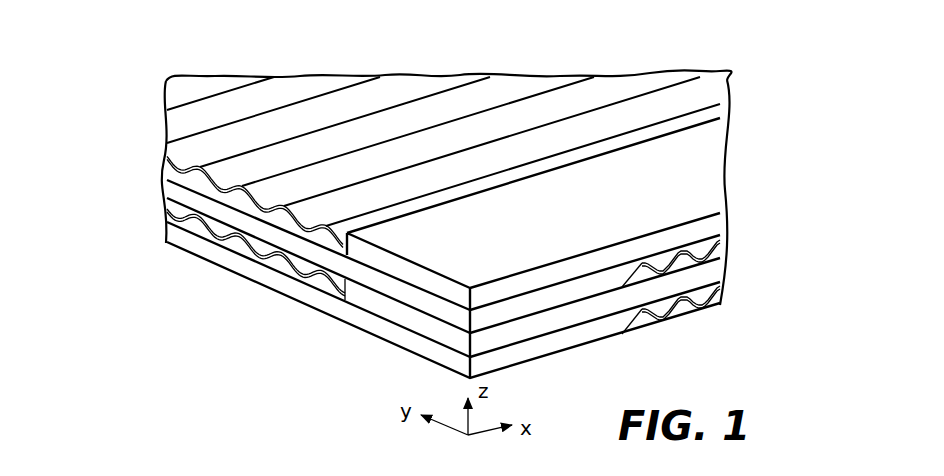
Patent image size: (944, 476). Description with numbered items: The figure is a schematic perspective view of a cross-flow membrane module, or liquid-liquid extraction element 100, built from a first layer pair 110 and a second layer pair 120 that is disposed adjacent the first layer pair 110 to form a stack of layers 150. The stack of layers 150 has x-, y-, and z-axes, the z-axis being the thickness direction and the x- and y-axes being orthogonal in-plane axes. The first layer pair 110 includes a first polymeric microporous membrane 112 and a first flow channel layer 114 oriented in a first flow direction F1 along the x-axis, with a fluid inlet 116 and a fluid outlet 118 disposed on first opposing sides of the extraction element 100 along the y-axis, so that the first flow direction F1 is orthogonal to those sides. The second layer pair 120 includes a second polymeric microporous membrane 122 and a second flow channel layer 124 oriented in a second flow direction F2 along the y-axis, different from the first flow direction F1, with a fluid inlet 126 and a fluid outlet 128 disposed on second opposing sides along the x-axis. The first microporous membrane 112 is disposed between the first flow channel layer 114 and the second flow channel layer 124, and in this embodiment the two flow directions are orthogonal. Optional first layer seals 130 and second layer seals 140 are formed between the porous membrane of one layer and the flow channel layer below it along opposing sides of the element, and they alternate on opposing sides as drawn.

The liquid-liquid extraction element 100 is at (627, 52).
The first layer pair 110 is at (163, 139).
The first polymeric microporous membrane 112 is at (292, 279).
The first flow channel layer 114 is at (439, 90).
The fluid inlet 116 is at (159, 218).
The fluid outlet 118 is at (727, 132).
The second layer pair 120 is at (723, 237).
The second polymeric microporous membrane 122 is at (697, 272).
The second flow channel layer 124 is at (718, 227).
The fluid inlet 126 is at (668, 312).
The fluid outlet 128 is at (318, 74).
The first layer seals 130 is at (390, 310).
The second layer seals 140 is at (512, 312).
The stack of layers 150 is at (137, 188).
The first flow direction F1 is at (170, 258).
The second flow direction F2 is at (648, 274).